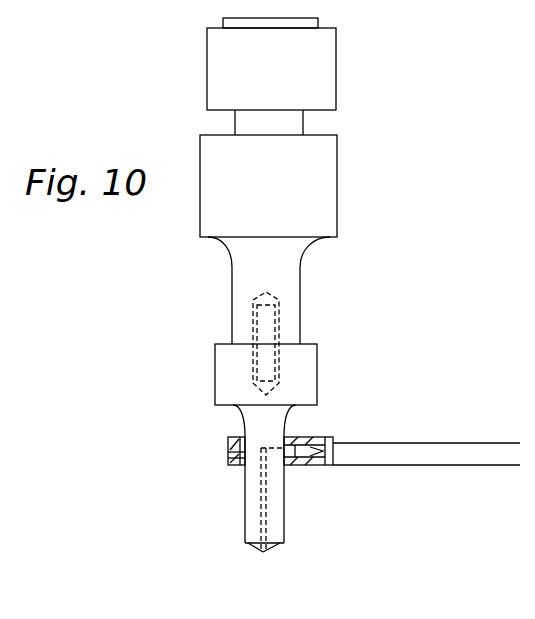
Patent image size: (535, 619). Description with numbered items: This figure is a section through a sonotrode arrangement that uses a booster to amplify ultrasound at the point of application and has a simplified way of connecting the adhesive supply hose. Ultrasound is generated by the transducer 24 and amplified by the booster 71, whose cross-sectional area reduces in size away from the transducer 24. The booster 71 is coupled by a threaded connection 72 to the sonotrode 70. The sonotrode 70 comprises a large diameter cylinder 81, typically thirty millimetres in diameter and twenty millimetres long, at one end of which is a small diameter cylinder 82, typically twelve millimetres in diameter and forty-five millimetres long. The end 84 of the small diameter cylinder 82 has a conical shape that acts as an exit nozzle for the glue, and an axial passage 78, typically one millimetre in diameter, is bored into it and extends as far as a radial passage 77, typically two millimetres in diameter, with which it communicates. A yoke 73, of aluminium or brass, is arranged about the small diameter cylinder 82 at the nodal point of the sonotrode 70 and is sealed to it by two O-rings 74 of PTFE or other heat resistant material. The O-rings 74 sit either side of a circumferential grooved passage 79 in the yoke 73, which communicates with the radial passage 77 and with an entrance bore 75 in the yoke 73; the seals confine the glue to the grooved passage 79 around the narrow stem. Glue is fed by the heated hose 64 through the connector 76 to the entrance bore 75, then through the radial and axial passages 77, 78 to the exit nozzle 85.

The transducer 24 is at (307, 75).
The booster 71 is at (318, 216).
The sonotrode 70 is at (289, 370).
The large diameter cylinder 81 is at (215, 353).
The threaded connection 72 is at (279, 331).
The small diameter cylinder 82 is at (243, 518).
The axial passage 78 is at (265, 510).
The radial passage 77 is at (265, 447).
The end of small diameter cylinder 84 is at (258, 547).
The exit nozzle 85 is at (267, 547).
The circumferential grooved passage 79 is at (227, 447).
The O-rings 74 is at (230, 467).
The yoke 73 is at (290, 443).
The entrance bore 75 is at (300, 467).
The connector 76 is at (333, 468).
The heated hose 64 is at (430, 443).